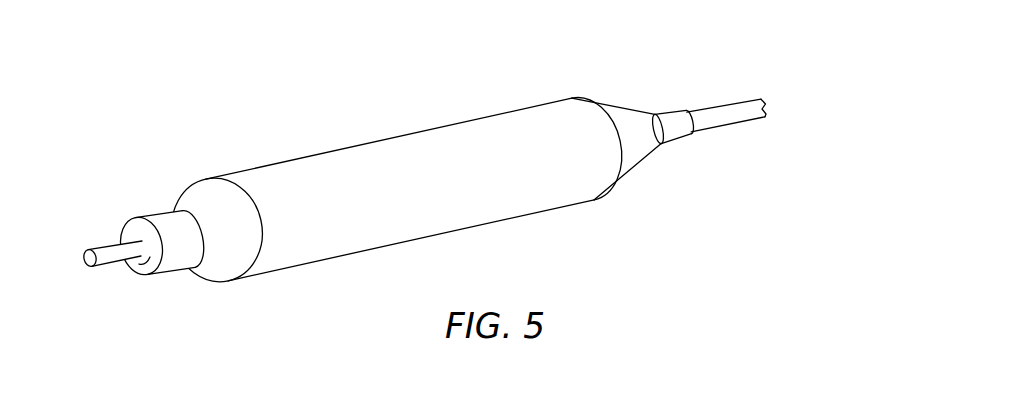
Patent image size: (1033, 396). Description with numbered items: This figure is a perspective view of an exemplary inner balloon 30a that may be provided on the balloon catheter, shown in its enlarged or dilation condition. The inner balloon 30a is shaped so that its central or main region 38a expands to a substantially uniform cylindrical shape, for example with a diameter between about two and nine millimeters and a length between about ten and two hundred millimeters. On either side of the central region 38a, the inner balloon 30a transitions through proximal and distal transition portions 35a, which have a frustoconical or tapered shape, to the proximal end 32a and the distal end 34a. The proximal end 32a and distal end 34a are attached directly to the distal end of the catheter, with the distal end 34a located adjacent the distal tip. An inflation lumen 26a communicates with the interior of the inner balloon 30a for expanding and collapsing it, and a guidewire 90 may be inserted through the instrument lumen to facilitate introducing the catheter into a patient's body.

The inflation lumen 26a is at (138, 275).
The inner balloon 30a is at (444, 160).
The proximal end 32a is at (182, 264).
The distal end 34a is at (665, 122).
The transition portions 35a is at (203, 192).
The central region 38a is at (472, 128).
The guidewire 90 is at (740, 107).